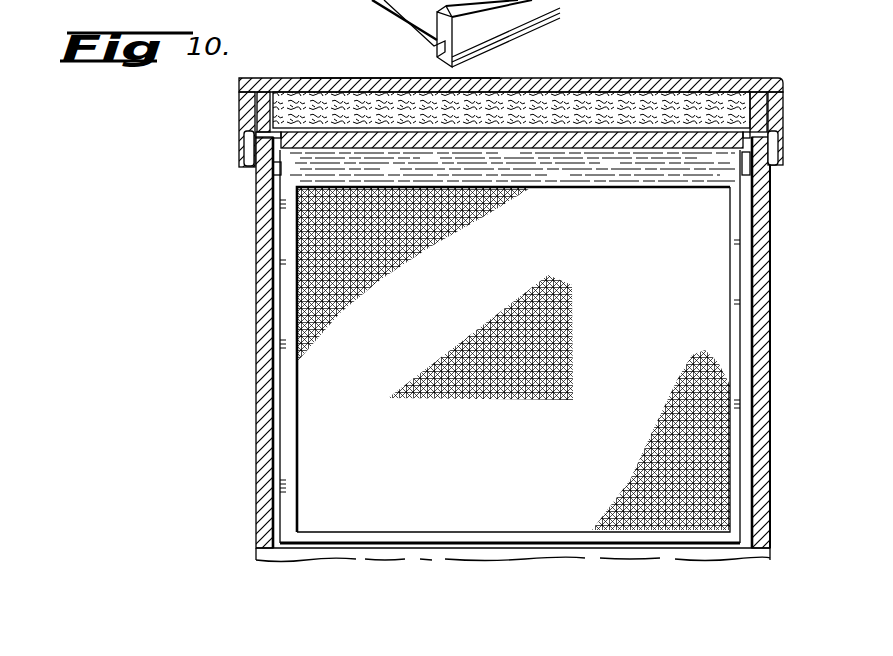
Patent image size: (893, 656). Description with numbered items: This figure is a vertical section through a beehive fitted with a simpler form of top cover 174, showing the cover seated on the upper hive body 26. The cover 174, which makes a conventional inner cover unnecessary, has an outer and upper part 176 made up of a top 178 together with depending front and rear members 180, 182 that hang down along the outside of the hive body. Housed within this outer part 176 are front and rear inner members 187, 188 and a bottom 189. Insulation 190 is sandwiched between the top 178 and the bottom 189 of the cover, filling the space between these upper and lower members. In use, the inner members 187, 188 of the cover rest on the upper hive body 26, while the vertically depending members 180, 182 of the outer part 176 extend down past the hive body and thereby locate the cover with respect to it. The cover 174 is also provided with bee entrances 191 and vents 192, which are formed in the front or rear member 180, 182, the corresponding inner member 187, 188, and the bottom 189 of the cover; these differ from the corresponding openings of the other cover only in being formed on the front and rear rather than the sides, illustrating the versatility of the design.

The upper hive body 26 is at (254, 291).
The top cover 174 is at (694, 79).
The outer and upper part 176 is at (568, 80).
The top 178 is at (397, 78).
The front member 180 is at (239, 97).
The rear member 182 is at (785, 107).
The front inner member 187 is at (263, 95).
The rear inner member 188 is at (757, 92).
The bottom 189 is at (635, 145).
The insulation 190 is at (337, 100).
The bee entrances 191 is at (785, 146).
The vents 192 is at (238, 144).